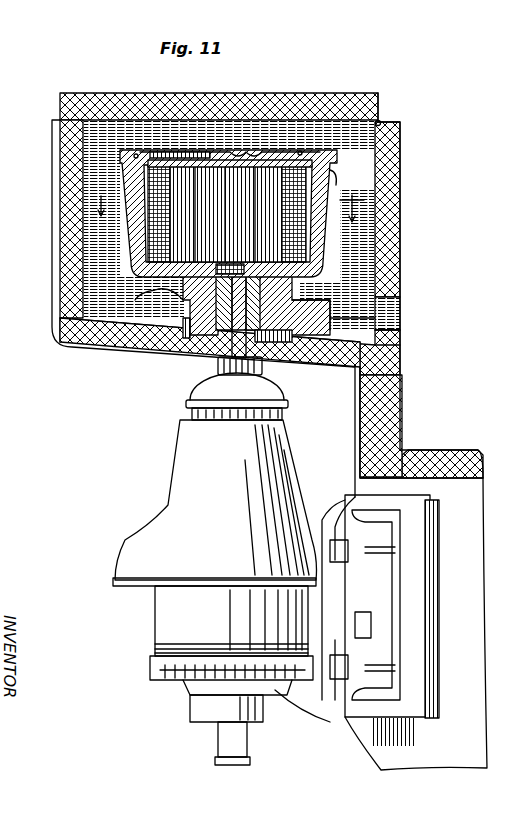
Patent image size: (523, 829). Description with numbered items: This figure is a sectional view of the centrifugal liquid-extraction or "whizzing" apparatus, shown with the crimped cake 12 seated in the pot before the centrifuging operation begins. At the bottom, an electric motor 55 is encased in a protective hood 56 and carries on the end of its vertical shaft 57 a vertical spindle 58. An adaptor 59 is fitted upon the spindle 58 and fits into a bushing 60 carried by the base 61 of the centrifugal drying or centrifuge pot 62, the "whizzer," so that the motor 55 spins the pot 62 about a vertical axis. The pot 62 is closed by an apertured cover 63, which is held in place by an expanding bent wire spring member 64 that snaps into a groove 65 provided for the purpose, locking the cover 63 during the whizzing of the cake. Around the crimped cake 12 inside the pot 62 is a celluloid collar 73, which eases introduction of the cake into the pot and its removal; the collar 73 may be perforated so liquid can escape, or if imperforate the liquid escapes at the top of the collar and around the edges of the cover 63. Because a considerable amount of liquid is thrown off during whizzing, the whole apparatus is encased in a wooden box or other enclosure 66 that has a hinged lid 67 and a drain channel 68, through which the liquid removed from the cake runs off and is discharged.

The crimped cake 12 is at (80, 183).
The electric motor 55 is at (163, 622).
The protective hood 56 is at (182, 447).
The vertical shaft 57 is at (215, 367).
The vertical spindle 58 is at (228, 291).
The adaptor 59 is at (262, 298).
The bushing 60 is at (300, 287).
The base 61 is at (282, 323).
The centrifuge pot 62 is at (338, 193).
The apertured cover 63 is at (312, 163).
The expanding bent wire spring member 64 is at (208, 155).
The groove 65 is at (137, 157).
The enclosure 66 is at (68, 205).
The hinged lid 67 is at (178, 156).
The drain channel 68 is at (395, 333).
The celluloid collar 73 is at (335, 185).